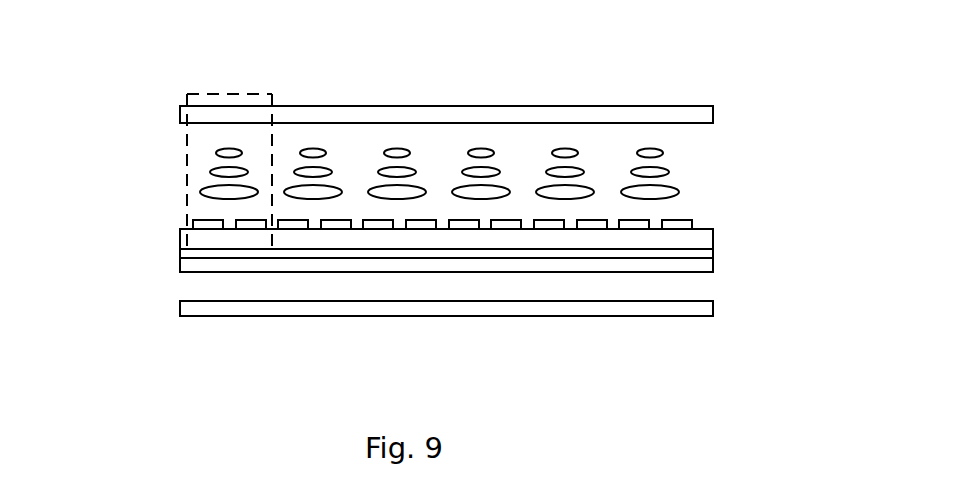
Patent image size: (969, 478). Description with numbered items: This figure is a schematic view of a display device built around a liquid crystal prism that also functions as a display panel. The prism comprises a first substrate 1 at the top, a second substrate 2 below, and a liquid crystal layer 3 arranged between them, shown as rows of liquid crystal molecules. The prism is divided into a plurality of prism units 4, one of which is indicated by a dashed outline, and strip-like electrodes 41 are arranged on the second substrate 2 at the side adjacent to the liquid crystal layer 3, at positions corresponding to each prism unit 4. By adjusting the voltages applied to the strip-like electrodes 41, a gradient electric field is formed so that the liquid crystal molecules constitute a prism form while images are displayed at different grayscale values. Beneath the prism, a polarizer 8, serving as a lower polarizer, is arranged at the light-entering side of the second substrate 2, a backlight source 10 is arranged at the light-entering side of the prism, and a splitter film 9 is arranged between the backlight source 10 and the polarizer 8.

The first substrate 1 is at (697, 105).
The second substrate 2 is at (472, 295).
The liquid crystal layer 3 is at (692, 171).
The prism unit 4 is at (185, 162).
The strip-like electrodes 41 is at (205, 219).
The polarizer 8 is at (190, 255).
The splitter film 9 is at (198, 265).
The backlight source 10 is at (205, 308).